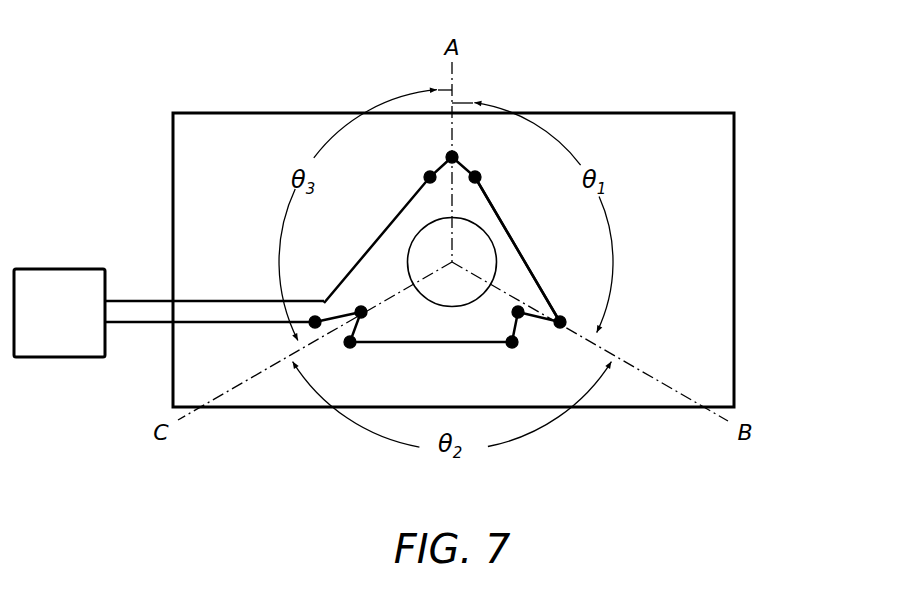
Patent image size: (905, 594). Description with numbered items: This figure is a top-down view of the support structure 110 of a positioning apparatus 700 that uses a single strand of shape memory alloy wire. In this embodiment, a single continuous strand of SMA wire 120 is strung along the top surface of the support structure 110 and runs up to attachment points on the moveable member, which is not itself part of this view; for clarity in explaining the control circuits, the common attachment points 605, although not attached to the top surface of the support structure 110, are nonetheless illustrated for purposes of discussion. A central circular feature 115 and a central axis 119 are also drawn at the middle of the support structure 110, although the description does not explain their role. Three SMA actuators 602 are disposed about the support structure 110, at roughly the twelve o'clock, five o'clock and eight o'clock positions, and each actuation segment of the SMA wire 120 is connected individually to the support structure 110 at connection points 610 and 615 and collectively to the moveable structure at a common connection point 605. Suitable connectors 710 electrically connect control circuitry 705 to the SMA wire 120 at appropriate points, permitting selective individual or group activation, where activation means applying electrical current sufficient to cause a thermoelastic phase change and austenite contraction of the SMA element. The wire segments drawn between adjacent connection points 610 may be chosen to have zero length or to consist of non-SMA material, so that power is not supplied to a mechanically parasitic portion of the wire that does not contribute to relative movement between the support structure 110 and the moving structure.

The positioning apparatus 700 is at (486, 224).
The control circuitry 705 is at (36, 325).
The connectors 710 is at (185, 311).
The support structure 110 is at (710, 290).
The bore 115 is at (496, 247).
The axis 119 is at (452, 262).
The SMA wire 120 is at (533, 270).
The SMA actuator assemblies 602 is at (414, 238).
The common connection point 605 is at (518, 312).
The connection point 610 is at (475, 177).
The connection point 615 is at (430, 177).